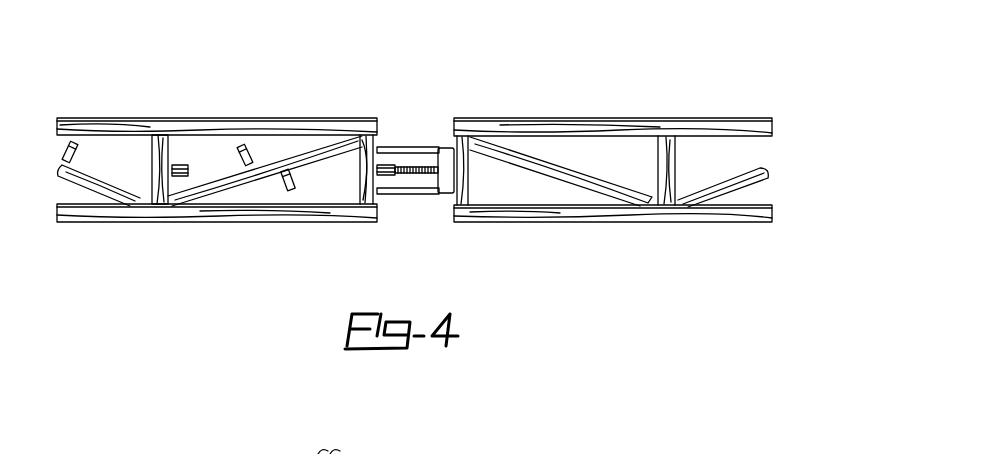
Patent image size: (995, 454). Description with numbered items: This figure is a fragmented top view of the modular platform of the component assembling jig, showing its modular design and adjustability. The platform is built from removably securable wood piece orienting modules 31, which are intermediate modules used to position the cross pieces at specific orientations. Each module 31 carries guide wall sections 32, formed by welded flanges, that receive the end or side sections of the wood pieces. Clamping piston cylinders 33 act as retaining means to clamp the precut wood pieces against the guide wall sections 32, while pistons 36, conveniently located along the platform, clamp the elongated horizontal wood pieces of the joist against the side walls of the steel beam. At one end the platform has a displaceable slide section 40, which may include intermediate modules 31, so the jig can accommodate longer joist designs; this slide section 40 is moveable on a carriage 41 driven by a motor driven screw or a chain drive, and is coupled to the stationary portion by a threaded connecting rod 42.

The module 31 is at (222, 132).
The guide wall section 32 is at (150, 190).
The clamping piston cylinder 33 is at (241, 168).
The piston 36 is at (80, 142).
The displaceable slide section 40 is at (611, 118).
The carriage 41 is at (446, 150).
The threaded rod 42 is at (410, 165).